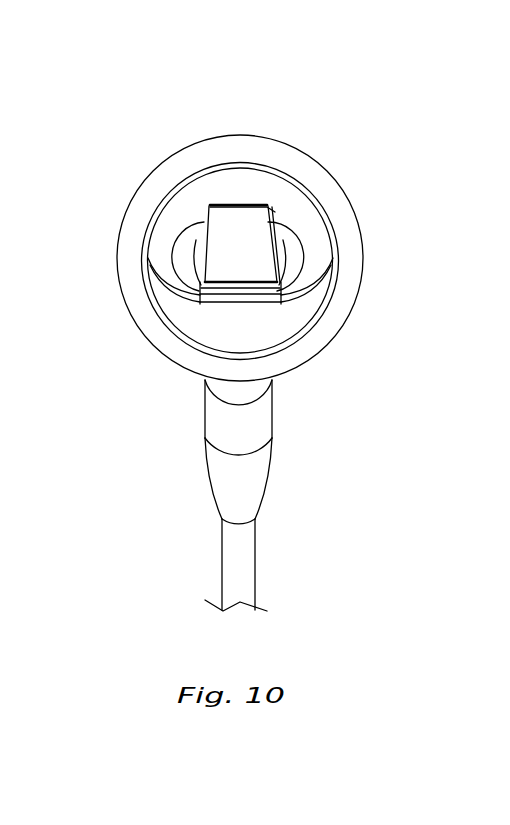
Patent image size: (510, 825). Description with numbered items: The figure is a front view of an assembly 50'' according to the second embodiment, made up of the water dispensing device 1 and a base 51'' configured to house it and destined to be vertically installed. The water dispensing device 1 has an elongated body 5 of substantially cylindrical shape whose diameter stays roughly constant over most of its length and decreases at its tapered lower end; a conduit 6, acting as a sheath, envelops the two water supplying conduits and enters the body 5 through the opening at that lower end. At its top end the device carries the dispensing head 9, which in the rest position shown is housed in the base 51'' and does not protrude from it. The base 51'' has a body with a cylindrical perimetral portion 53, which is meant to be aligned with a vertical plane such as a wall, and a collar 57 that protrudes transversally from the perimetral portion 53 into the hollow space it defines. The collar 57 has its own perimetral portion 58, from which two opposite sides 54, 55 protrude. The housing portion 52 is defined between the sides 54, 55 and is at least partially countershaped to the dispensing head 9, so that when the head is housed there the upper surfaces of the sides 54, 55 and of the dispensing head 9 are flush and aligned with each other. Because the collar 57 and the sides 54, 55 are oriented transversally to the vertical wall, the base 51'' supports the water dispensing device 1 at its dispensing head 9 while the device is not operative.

The water dispensing device 1 is at (297, 412).
The body 5 is at (218, 425).
The conduit 6 is at (247, 487).
The dispensing head 9 is at (222, 235).
The assembly 50'' is at (240, 192).
The base 51'' is at (259, 225).
The housing portion 52 is at (244, 278).
The perimetral portion 53 is at (349, 261).
The side 54 is at (248, 303).
The side 55 is at (240, 204).
The collar 57 is at (181, 318).
The perimetral portion of the collar 58 is at (163, 250).